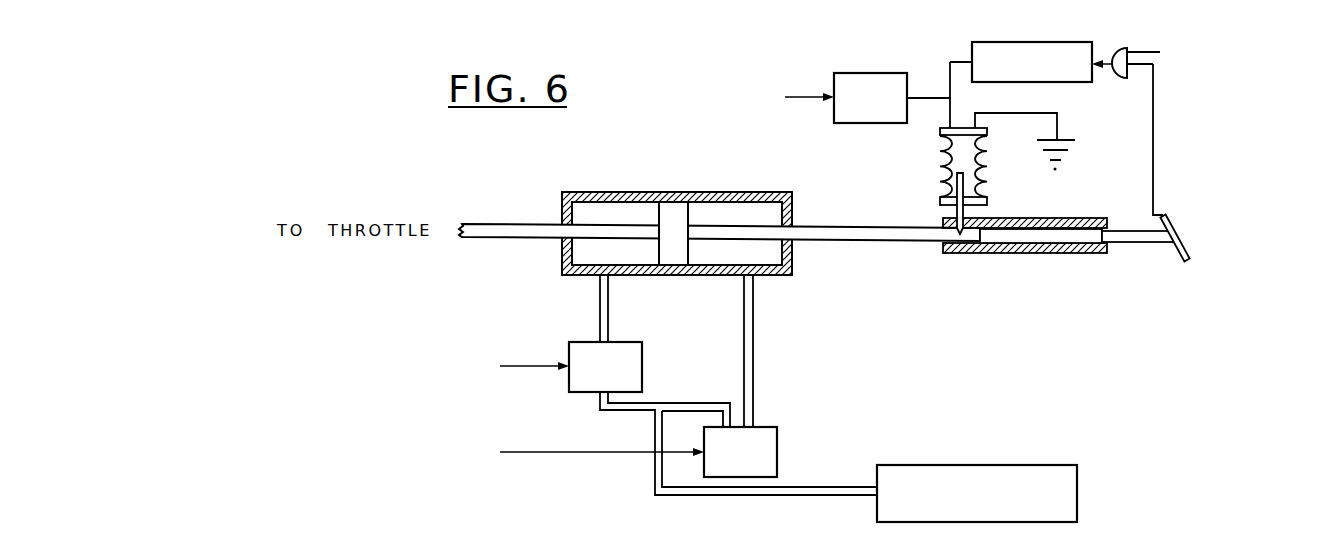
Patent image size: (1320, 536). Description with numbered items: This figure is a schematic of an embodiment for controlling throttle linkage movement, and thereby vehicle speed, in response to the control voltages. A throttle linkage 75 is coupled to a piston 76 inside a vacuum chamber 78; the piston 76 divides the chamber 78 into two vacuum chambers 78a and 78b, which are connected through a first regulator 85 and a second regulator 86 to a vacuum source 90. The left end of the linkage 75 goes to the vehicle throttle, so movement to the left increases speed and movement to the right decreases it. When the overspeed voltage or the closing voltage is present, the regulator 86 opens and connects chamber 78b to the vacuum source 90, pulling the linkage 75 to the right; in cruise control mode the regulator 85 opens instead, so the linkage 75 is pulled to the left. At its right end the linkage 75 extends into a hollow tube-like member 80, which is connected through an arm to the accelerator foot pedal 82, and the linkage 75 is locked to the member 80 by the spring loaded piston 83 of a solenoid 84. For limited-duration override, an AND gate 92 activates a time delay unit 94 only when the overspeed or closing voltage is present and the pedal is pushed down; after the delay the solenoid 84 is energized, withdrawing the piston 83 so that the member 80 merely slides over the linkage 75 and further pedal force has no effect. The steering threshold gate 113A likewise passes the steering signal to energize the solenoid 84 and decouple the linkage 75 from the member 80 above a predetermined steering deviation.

The throttle linkage 75 is at (850, 232).
The piston 76 is at (675, 213).
The vacuum chamber 78 is at (767, 192).
The vacuum chamber 78a is at (623, 252).
The vacuum chamber 78b is at (763, 257).
The hollow tube-like member 80 is at (1016, 255).
The accelerator foot pedal 82 is at (1188, 243).
The spring loaded piston 83 is at (956, 212).
The solenoid 84 is at (988, 141).
The regulator 85 is at (645, 367).
The regulator 86 is at (780, 455).
The vacuum source 90 is at (983, 465).
The AND gate 92 is at (1120, 47).
The time delay unit 94 is at (1025, 42).
The steering threshold gate 113A is at (870, 73).